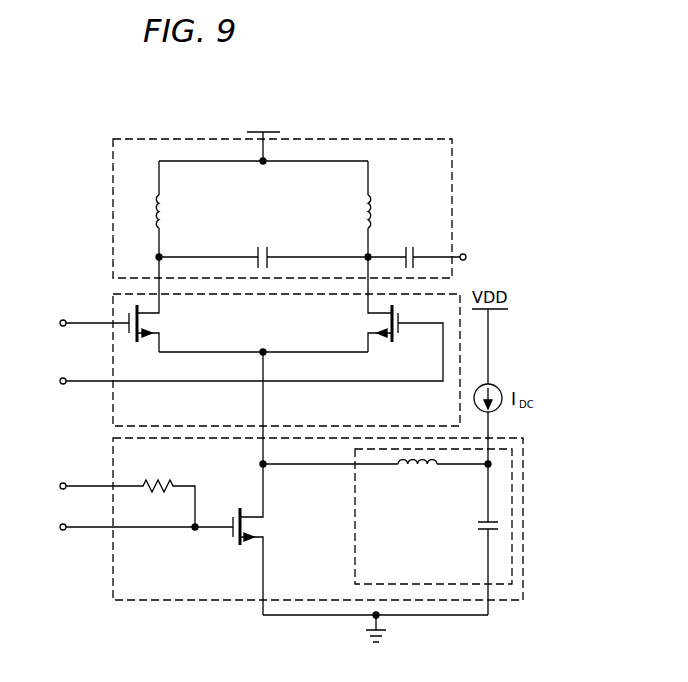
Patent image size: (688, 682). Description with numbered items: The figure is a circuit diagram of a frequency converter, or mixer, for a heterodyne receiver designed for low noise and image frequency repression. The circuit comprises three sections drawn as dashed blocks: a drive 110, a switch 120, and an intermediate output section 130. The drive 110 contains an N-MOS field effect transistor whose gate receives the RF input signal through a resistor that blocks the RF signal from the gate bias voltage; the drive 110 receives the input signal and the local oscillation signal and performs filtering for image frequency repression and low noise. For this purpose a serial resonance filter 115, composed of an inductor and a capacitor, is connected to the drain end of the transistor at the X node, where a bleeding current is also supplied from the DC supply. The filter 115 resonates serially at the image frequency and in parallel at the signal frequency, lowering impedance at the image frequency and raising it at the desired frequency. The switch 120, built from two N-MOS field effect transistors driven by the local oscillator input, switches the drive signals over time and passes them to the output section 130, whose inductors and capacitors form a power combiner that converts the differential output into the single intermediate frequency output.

The drive 110 is at (113, 585).
The filter 115 is at (512, 528).
The switch 120 is at (113, 405).
The intermediate output section 130 is at (113, 210).